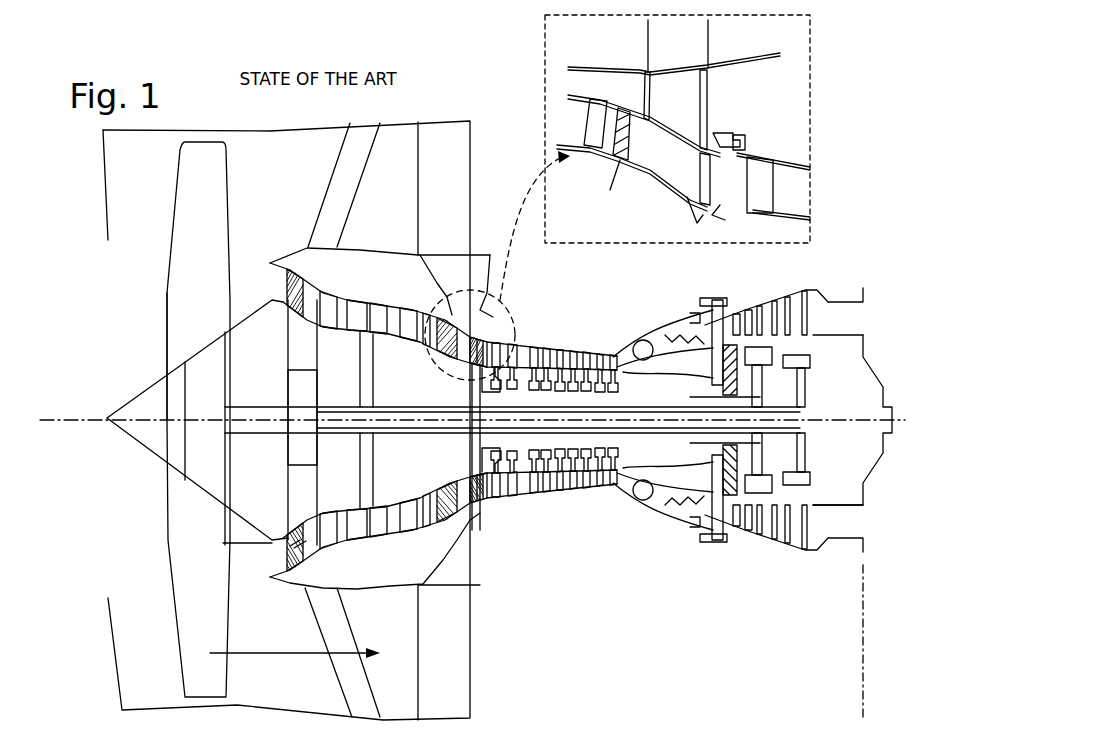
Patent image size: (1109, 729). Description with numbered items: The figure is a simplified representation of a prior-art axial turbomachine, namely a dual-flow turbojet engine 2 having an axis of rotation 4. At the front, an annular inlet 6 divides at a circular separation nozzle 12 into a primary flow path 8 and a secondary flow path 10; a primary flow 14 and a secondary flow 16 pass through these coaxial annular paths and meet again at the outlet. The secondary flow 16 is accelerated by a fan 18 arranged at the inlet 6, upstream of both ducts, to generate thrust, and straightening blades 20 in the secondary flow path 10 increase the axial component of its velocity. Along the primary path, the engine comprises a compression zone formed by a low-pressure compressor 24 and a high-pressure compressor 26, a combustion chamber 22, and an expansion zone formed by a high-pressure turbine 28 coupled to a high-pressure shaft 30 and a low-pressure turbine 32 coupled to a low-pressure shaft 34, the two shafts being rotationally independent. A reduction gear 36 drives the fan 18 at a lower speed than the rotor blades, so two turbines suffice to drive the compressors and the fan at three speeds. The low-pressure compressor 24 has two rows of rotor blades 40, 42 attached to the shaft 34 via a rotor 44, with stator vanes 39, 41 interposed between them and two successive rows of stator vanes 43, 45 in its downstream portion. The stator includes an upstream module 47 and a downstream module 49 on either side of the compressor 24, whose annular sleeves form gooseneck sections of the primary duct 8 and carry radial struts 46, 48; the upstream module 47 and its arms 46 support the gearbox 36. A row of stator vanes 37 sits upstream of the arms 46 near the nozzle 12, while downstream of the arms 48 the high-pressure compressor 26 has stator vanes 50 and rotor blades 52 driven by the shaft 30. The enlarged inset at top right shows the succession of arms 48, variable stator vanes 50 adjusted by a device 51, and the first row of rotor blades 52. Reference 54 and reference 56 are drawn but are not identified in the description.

The dual-flow turbojet engine 2 is at (520, 614).
The axis of rotation 4 is at (107, 425).
The annular inlet 6 is at (144, 225).
The primary flow path 8 is at (315, 505).
The secondary flow path 10 is at (306, 163).
The circular separation nozzle 12 is at (283, 582).
The primary flow 14 is at (262, 588).
The secondary flow 16 is at (300, 660).
The fan 18 is at (167, 292).
The straightening blades 20 is at (434, 200).
The combustion chamber 22 is at (660, 340).
The low-pressure compressor 24 is at (381, 265).
The high-pressure compressor 26 is at (566, 320).
The high-pressure turbine 28 is at (750, 560).
The high-pressure shaft 30 is at (660, 470).
The low-pressure turbine 32 is at (795, 565).
The low-pressure shaft 34 is at (805, 430).
The reduction gear 36 is at (313, 450).
The stator vanes 37 is at (295, 575).
The stator vanes 39 is at (341, 555).
The rotor blades 40 is at (349, 548).
The stator vanes 41 is at (365, 555).
The rotor blades 42 is at (376, 548).
The stator vanes 43 is at (402, 552).
The rotor 44 is at (370, 335).
The stator vanes 45 is at (418, 542).
The struts 46 is at (323, 290).
The upstream module 47 is at (296, 256).
The struts 48 is at (465, 365).
The downstream module 49 is at (458, 569).
The stator vanes 50 is at (606, 348).
The device 51 is at (740, 135).
The rotor blades 52 is at (598, 470).
The compressor outer casing 54 is at (425, 308).
The compressor hub 56 is at (405, 340).